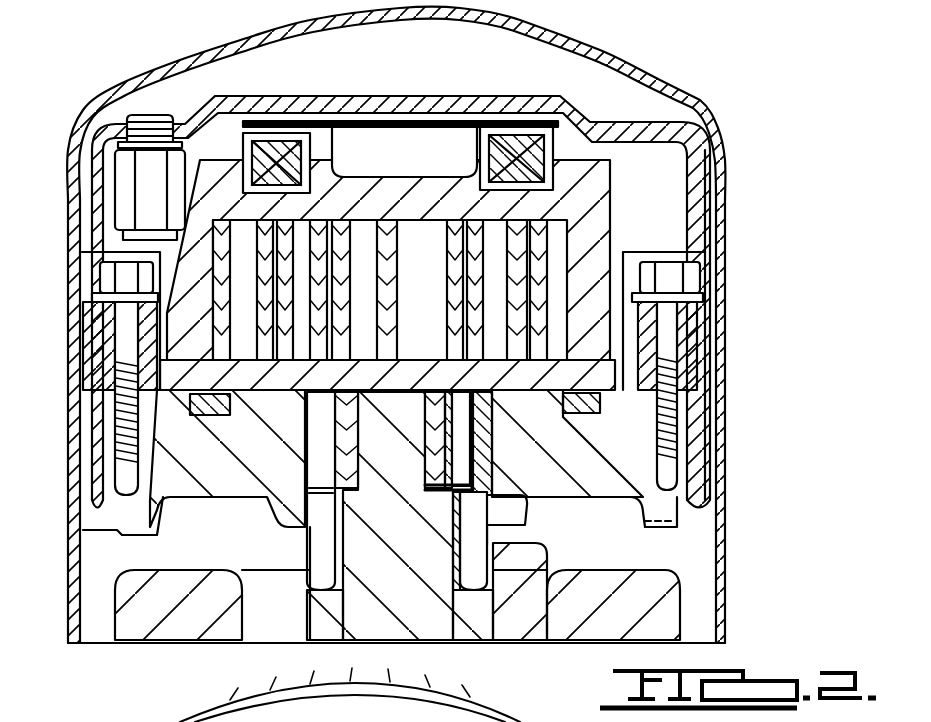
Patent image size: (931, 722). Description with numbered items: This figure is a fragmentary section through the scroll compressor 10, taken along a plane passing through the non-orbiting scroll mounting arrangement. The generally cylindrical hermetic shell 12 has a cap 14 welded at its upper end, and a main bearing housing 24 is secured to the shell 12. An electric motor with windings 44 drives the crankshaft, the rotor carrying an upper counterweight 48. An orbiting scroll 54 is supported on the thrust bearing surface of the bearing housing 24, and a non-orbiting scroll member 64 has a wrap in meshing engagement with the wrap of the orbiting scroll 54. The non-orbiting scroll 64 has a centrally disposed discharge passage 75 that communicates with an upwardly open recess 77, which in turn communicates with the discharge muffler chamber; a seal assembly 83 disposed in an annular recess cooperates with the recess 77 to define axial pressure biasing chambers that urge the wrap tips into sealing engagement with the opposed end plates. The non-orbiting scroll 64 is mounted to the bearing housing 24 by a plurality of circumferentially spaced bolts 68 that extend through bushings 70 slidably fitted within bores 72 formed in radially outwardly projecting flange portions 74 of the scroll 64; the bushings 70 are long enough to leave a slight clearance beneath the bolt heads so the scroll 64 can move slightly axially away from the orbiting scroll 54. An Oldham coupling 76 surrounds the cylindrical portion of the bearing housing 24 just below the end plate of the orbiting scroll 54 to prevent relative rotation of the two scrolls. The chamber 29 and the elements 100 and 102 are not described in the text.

The compressor 10 is at (750, 123).
The hermetic shell 12 is at (723, 343).
The cap 14 is at (607, 57).
The main bearing housing 24 is at (700, 518).
The chamber 29 is at (395, 48).
The windings 44 is at (670, 612).
The upper counterweight 48 is at (507, 630).
The orbiting scroll 54 is at (180, 380).
The non-orbiting scroll member 64 is at (600, 200).
The bolts 68 is at (187, 373).
The bushings 70 is at (130, 363).
The bores 72 is at (105, 333).
The flange portions 74 is at (108, 340).
The discharge passage 75 is at (432, 192).
The Oldham coupling 76 is at (603, 404).
The upwardly open recess 77 is at (353, 148).
The seal assembly 83 is at (240, 130).
The cover of second embodiment 100 is at (195, 718).
The cover wall 102 is at (268, 696).